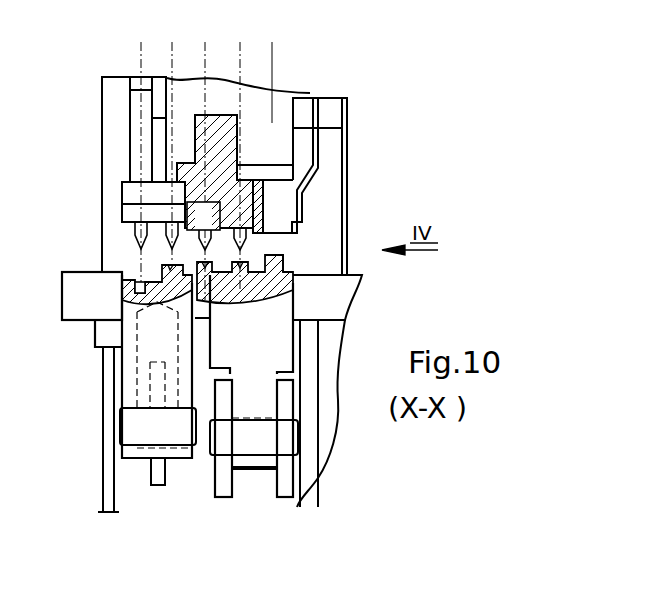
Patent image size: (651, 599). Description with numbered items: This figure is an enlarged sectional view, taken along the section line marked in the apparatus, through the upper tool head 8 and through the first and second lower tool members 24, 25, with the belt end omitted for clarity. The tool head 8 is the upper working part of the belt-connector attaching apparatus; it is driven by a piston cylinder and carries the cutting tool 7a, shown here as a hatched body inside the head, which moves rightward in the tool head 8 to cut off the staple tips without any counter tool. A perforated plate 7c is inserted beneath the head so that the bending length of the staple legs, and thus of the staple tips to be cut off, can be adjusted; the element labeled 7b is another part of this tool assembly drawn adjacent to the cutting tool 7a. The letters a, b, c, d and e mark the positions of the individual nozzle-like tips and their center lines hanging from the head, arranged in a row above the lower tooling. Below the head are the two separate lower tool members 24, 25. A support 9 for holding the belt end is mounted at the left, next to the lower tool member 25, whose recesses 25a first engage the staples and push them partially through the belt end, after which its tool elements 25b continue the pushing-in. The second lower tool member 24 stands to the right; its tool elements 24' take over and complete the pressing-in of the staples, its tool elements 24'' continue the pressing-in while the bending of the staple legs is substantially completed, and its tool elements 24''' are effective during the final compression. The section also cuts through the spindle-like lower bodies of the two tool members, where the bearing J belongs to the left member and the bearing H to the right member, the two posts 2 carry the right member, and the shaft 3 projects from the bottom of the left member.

The nozzle position a is at (140, 157).
The nozzle position b is at (171, 141).
The nozzle position c is at (205, 160).
The nozzle position d is at (239, 155).
The position e is at (272, 72).
The cutting tool 7a is at (197, 202).
The nozzle holder part 7b is at (250, 222).
The perforated plate 7c is at (197, 220).
The tool head 8 is at (228, 140).
The support 9 is at (62, 302).
The lower tool member 25 is at (125, 358).
The recesses 25a is at (135, 288).
The tool elements 25b is at (167, 268).
The lower tool member 24 is at (329, 391).
The tool elements 24' is at (190, 256).
The tool elements 24'' is at (244, 291).
The tool elements 24''' is at (308, 257).
The bearing J is at (135, 425).
The bearing H is at (293, 435).
The support posts 2 is at (278, 486).
The spindle shaft 3 is at (158, 485).